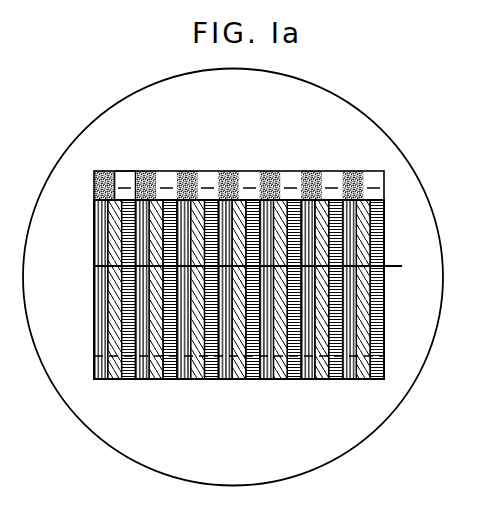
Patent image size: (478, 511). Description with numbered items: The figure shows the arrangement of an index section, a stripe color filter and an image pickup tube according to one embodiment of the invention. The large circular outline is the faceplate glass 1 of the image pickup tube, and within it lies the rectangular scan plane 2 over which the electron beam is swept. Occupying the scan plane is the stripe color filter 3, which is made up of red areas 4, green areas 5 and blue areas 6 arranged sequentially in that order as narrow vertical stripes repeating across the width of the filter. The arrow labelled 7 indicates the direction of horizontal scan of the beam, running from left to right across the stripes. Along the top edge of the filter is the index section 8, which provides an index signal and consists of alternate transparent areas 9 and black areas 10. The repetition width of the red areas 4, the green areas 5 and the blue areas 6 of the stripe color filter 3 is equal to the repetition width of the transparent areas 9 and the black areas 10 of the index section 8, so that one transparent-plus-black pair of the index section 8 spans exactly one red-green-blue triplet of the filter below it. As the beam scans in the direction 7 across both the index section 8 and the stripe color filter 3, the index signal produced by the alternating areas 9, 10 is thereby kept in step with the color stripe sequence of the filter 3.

The faceplate glass 1 is at (350, 121).
The scan plane 2 is at (363, 222).
The stripe color filter 3 is at (384, 337).
The red areas 4 is at (138, 380).
The green areas 5 is at (197, 380).
The blue areas 6 is at (253, 380).
The direction of horizontal scan 7 is at (393, 261).
The index section 8 is at (385, 188).
The transparent areas 9 is at (125, 170).
The black areas 10 is at (148, 170).